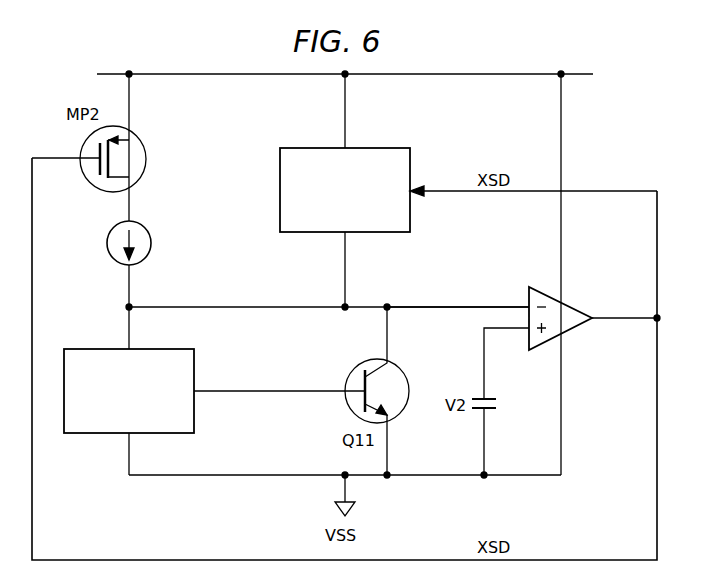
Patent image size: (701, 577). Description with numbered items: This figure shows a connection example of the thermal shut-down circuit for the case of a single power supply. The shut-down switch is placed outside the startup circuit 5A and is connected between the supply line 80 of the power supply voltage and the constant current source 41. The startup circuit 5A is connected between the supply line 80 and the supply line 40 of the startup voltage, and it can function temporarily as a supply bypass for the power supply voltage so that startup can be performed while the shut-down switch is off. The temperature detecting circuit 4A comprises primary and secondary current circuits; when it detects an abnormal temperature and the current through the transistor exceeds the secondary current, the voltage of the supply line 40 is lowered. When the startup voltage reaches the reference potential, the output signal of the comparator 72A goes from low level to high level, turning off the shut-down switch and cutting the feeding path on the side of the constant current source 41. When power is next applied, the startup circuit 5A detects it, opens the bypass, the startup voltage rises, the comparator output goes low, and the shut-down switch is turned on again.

The supply line 80 is at (497, 73).
The startup circuit 5A is at (318, 148).
The constant current source 41 is at (107, 243).
The temperature detecting circuit 4A is at (93, 435).
The supply line 40 is at (437, 312).
The comparator 72A is at (575, 331).